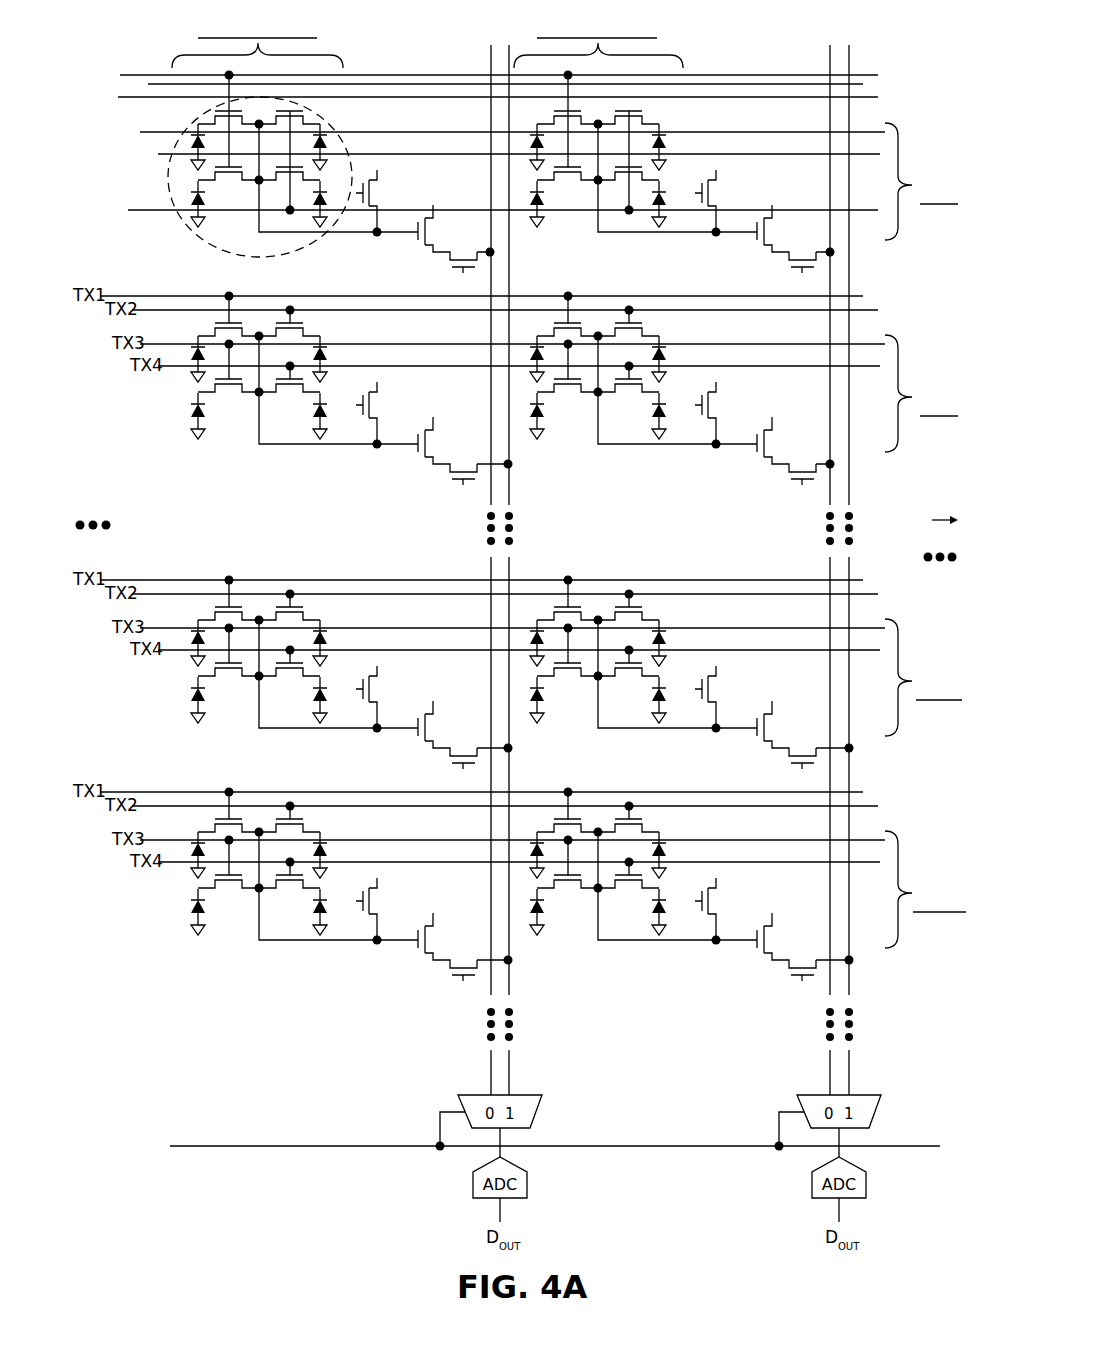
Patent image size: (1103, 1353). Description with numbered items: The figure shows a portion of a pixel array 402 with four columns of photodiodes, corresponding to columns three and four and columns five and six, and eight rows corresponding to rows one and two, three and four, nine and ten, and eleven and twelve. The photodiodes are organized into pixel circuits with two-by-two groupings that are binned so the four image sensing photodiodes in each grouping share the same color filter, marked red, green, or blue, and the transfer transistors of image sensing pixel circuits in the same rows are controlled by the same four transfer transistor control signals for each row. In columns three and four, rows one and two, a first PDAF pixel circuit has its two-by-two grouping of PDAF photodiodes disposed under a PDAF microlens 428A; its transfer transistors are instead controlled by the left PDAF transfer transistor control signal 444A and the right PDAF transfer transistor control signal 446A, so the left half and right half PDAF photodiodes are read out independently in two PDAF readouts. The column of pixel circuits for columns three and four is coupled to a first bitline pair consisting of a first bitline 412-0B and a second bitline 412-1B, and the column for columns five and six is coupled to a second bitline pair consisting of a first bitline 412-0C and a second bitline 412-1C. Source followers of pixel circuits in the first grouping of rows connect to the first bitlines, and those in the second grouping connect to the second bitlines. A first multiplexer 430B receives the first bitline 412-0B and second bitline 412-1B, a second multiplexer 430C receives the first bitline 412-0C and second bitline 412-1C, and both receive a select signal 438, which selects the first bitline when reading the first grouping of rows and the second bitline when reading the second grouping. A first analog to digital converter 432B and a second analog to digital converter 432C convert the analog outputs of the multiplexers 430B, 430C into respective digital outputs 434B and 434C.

The pixel array 402 is at (903, 36).
The PDAF transfer transistor control signal TXPD_L 444A is at (68, 53).
The PDAF transfer transistor control signal TXPD_R 446A is at (68, 198).
The PDAF microlens 428A is at (340, 128).
The first bitline BL0 412-0B is at (486, 1072).
The second bitline BL1 412-1B is at (514, 1072).
The first bitline BL0 412-0C is at (825, 1072).
The second bitline BL1 412-1C is at (853, 1072).
The multiplexer 430B is at (542, 1102).
The multiplexer 430C is at (881, 1102).
The ADC 432B is at (534, 1182).
The ADC 432C is at (873, 1182).
The digital output DOUT 434B is at (524, 1234).
The digital output DOUT 434C is at (863, 1234).
The select signal 438 is at (98, 1142).